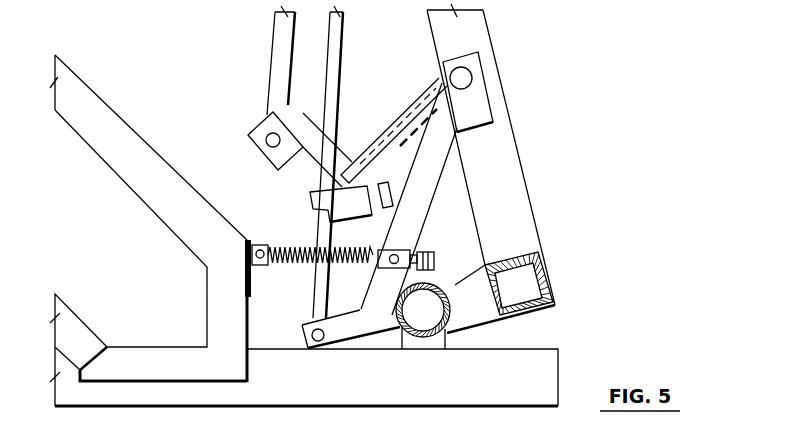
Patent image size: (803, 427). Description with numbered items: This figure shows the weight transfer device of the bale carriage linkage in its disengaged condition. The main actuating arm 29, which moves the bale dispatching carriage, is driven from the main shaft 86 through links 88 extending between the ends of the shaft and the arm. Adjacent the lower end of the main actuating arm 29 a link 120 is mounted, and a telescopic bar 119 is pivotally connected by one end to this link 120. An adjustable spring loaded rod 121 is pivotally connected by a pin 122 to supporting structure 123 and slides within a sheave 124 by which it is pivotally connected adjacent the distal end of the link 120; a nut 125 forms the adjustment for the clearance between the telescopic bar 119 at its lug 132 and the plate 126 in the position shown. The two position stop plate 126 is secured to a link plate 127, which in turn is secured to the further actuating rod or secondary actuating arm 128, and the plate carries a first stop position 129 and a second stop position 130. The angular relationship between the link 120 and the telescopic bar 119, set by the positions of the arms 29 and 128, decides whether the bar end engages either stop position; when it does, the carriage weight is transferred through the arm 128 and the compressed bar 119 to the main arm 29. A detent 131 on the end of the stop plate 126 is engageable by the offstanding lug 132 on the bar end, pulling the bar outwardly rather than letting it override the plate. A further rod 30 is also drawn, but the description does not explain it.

The main actuating arm 29 is at (489, 22).
The rod 30 is at (345, 34).
The main shaft 86 is at (415, 332).
The links 88 is at (483, 316).
The telescopic bar 119 is at (410, 100).
The link 120 is at (420, 223).
The adjustable spring loaded rod 121 is at (291, 264).
The pin 122 is at (258, 245).
The supporting structure 123 is at (166, 226).
The sheave 124 is at (404, 250).
The nut 125 is at (435, 262).
The stop plate 126 is at (334, 190).
The link plate 127 is at (262, 171).
The secondary actuating arm 128 is at (272, 30).
The first stop position 129 is at (373, 214).
The second stop position 130 is at (432, 200).
The detent 131 is at (394, 187).
The offstanding lug 132 is at (320, 142).